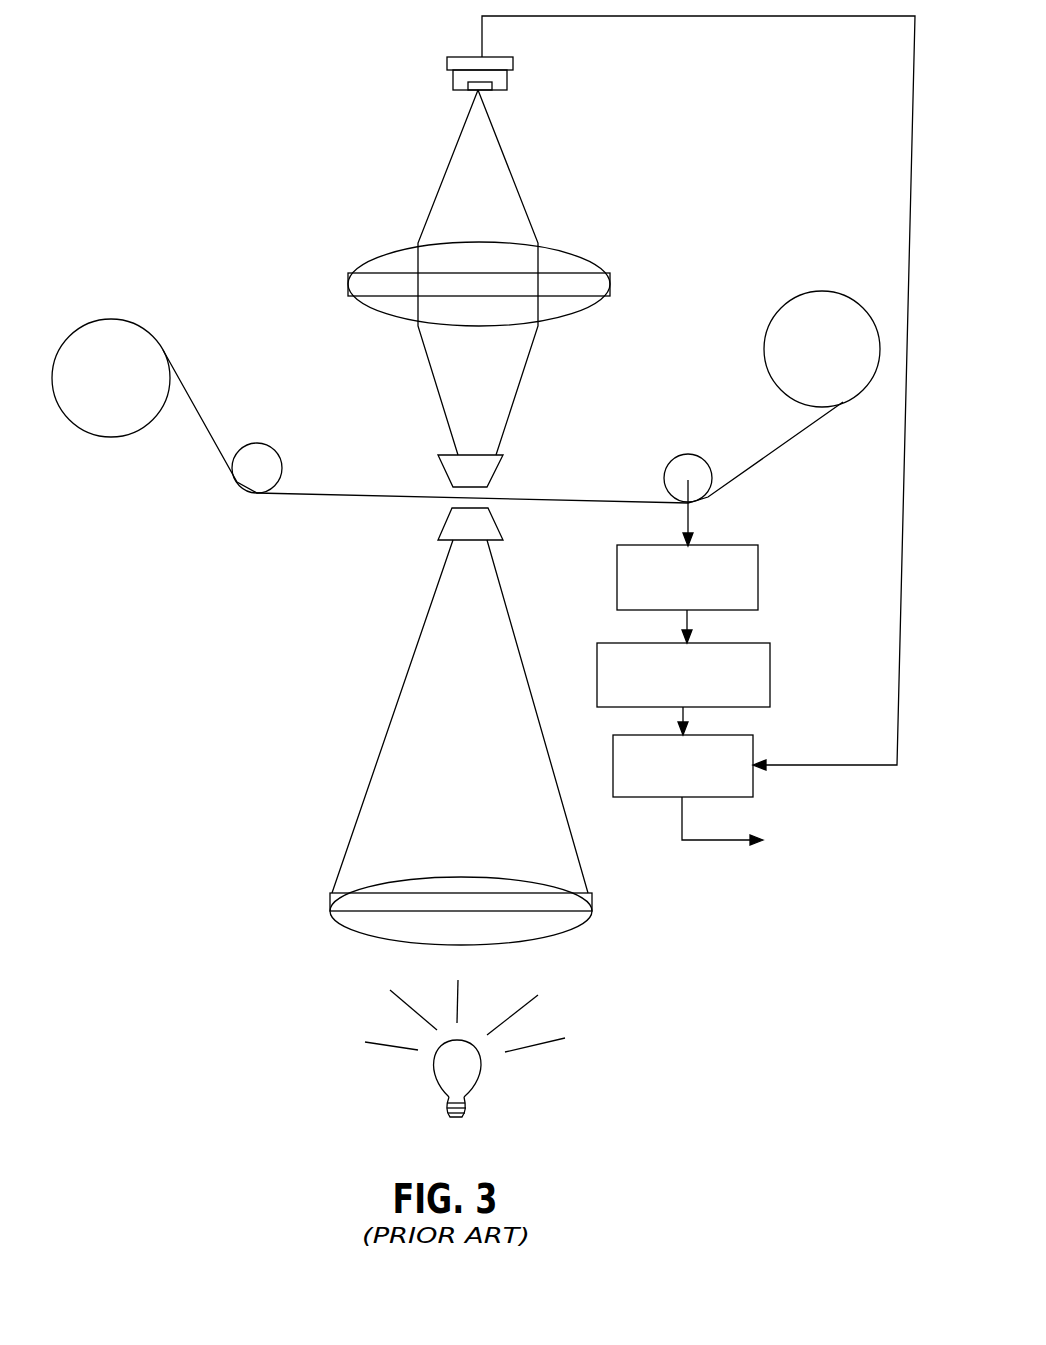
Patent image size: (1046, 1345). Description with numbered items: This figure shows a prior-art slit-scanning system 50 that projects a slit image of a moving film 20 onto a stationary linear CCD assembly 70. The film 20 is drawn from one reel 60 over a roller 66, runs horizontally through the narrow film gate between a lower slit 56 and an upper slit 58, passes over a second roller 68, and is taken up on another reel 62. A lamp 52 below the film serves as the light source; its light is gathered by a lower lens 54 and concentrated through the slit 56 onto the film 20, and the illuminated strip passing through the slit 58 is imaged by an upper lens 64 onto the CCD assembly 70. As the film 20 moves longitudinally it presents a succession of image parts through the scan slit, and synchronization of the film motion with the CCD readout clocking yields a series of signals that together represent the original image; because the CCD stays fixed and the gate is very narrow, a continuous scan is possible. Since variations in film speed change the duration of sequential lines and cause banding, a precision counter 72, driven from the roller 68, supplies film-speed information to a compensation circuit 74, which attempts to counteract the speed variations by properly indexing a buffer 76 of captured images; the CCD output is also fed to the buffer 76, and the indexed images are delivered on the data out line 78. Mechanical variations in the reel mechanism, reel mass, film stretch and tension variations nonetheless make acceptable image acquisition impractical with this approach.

The prior art film metrology system 50 is at (176, 82).
The film 20 is at (362, 495).
The light source lamp 52 is at (447, 1093).
The condenser lens 54 is at (367, 932).
The lower slit 56 is at (448, 541).
The upper slit 58 is at (498, 453).
The supply reel 60 is at (128, 323).
The take-up reel 62 is at (780, 310).
The imaging lens 64 is at (377, 258).
The guide roller 66 is at (282, 470).
The encoder roller 68 is at (663, 483).
The linear CCD assembly 70 is at (462, 55).
The precision counter 72 is at (758, 567).
The compensation circuit 74 is at (770, 673).
The buffer 76 is at (753, 781).
The data out line 78 is at (745, 837).